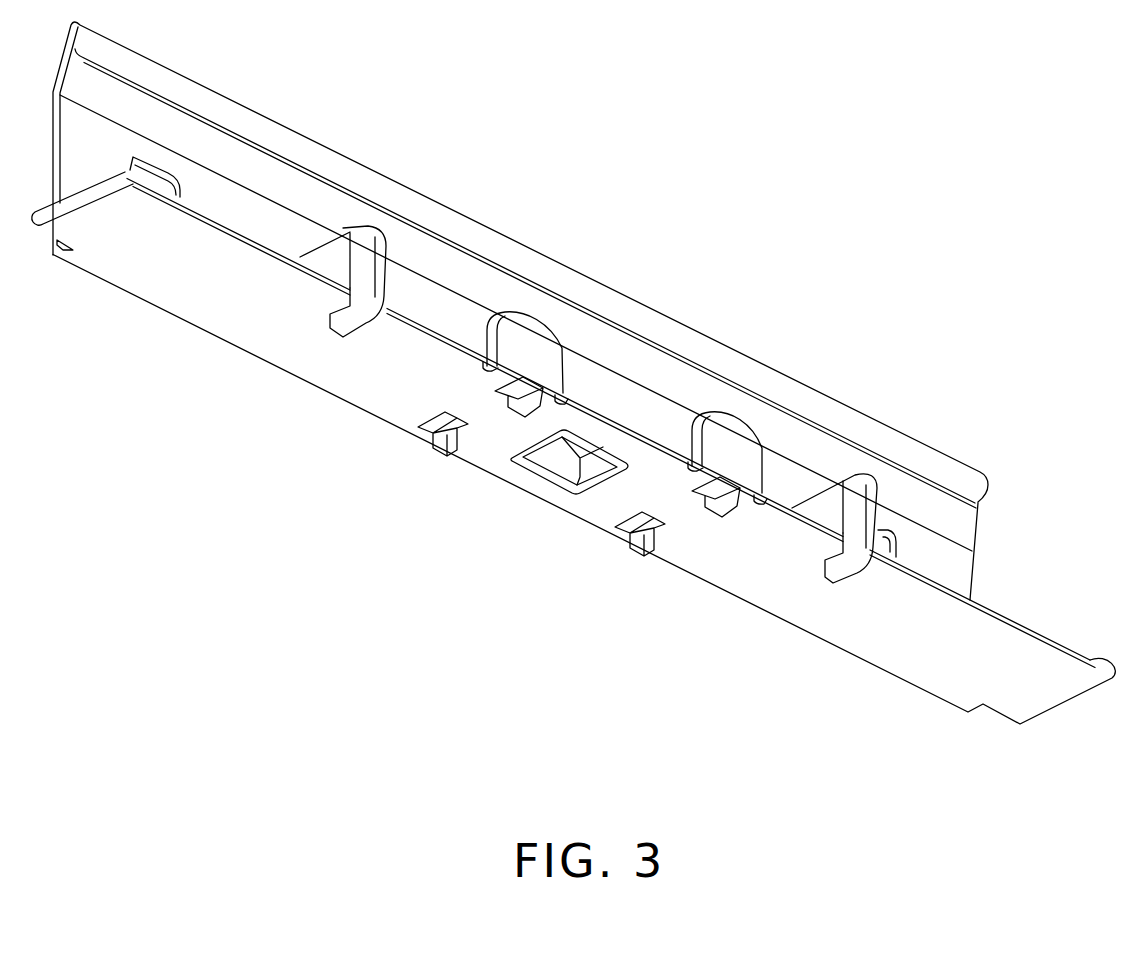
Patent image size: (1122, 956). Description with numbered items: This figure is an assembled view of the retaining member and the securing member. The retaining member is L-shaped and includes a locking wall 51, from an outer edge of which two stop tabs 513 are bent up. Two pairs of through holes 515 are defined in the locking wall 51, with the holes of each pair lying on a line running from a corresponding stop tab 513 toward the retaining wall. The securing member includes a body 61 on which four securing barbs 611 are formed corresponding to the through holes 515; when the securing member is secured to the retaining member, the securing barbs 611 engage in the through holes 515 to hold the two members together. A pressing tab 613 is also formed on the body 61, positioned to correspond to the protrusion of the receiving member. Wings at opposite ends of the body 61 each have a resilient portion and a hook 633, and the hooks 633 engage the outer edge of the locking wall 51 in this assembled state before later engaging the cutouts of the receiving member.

The locking wall 51 is at (383, 380).
The stop tab 513 is at (530, 345).
The through hole 515 is at (663, 522).
The body 61 is at (640, 408).
The securing barb 611 is at (450, 437).
The pressing tab 613 is at (572, 443).
The hook 633 is at (822, 570).